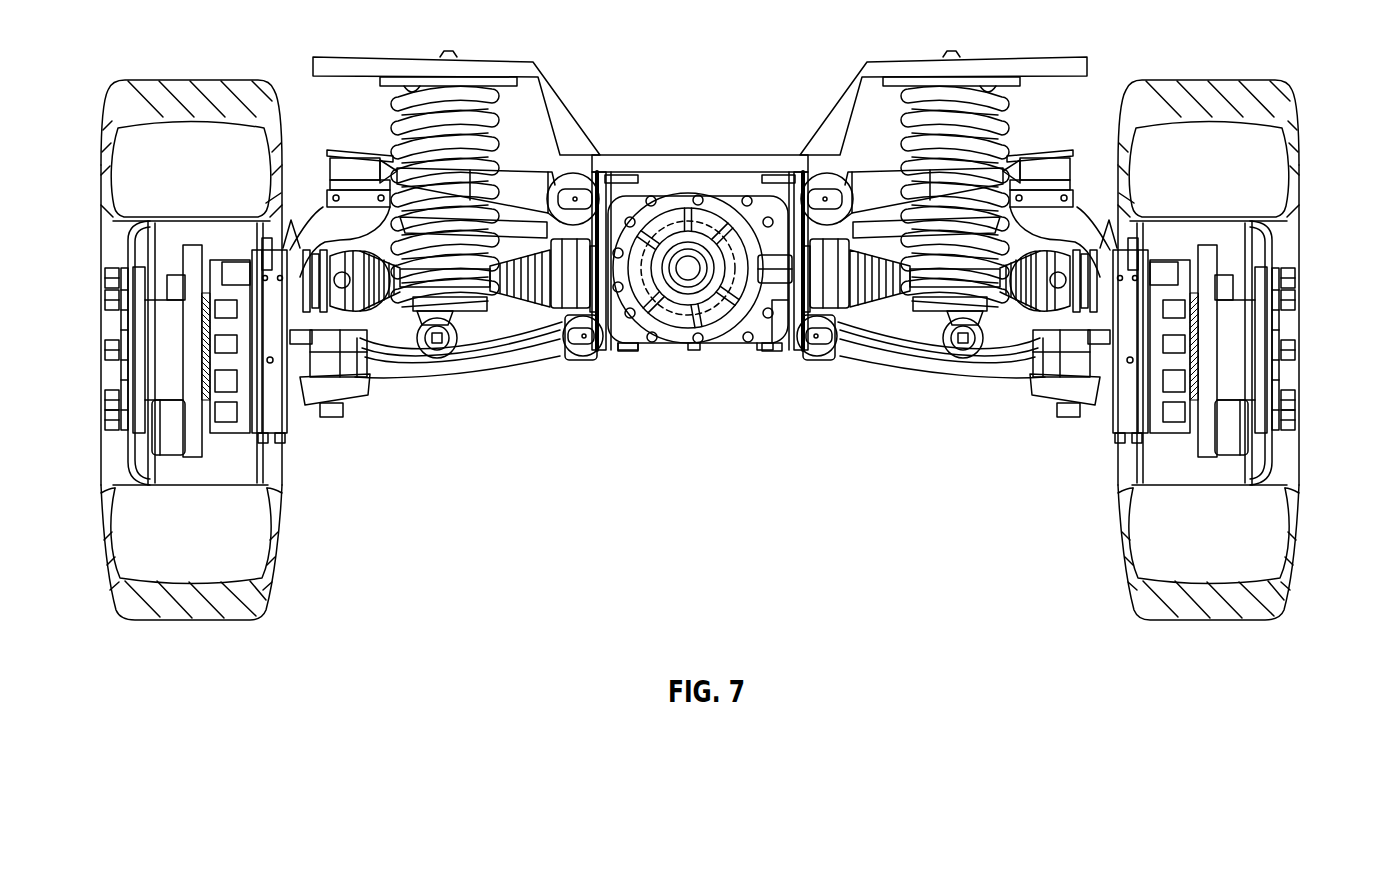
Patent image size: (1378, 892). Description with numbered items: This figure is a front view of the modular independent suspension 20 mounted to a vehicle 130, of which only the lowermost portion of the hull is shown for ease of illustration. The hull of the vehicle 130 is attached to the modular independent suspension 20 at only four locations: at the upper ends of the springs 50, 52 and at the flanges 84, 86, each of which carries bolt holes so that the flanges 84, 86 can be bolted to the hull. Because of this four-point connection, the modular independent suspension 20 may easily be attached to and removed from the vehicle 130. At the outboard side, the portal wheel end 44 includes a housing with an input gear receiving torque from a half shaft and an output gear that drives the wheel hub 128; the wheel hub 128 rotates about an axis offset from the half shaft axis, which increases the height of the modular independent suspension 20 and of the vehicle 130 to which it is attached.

The modular independent suspension 20 is at (732, 320).
The portal wheel end 44 is at (1090, 414).
The spring 50 is at (402, 130).
The spring 52 is at (997, 130).
The flange 84 is at (590, 170).
The flange 86 is at (806, 170).
The wheel hub 128 is at (1277, 328).
The vehicle 130 is at (880, 72).